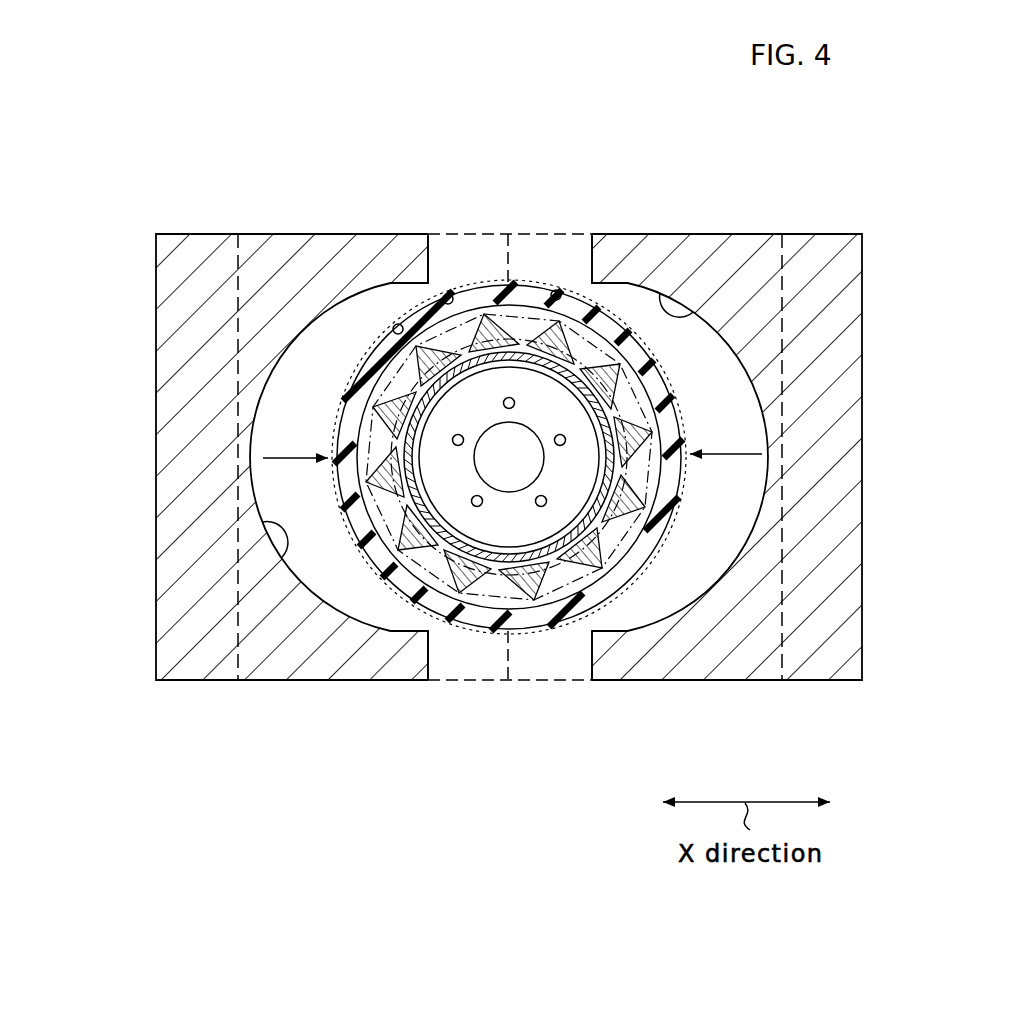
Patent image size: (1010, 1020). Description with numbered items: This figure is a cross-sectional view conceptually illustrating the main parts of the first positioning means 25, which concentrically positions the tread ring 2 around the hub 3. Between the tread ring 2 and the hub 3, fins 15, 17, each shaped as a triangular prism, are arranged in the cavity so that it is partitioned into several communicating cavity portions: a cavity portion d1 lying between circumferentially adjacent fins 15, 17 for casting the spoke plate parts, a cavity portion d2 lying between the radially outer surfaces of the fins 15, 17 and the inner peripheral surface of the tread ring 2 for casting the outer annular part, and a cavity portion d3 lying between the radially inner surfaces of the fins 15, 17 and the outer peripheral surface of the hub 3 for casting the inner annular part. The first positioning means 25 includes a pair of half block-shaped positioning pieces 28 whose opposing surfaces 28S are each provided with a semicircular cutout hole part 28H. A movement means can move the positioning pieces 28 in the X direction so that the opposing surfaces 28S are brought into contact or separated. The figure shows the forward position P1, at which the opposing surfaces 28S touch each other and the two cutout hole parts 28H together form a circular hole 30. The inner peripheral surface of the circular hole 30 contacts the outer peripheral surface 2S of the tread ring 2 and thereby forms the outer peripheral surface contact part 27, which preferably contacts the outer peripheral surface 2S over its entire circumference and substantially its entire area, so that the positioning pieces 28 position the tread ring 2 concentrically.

The tread ring 2 is at (611, 400).
The outer peripheral surface 2S is at (380, 356).
The hub 3 is at (545, 530).
The fin 15 is at (630, 442).
The fin 17 is at (640, 474).
The first positioning means 25 is at (888, 252).
The outer peripheral surface contact part 27 is at (403, 332).
The positioning piece 28 is at (303, 680).
The cutout hole part 28H is at (281, 558).
The opposing surface 28S is at (430, 657).
The circular hole 30 is at (588, 139).
The forward position P1 is at (566, 233).
The cavity portion d1 is at (492, 625).
The cavity portion d2 is at (527, 625).
The cavity portion d3 is at (455, 592).